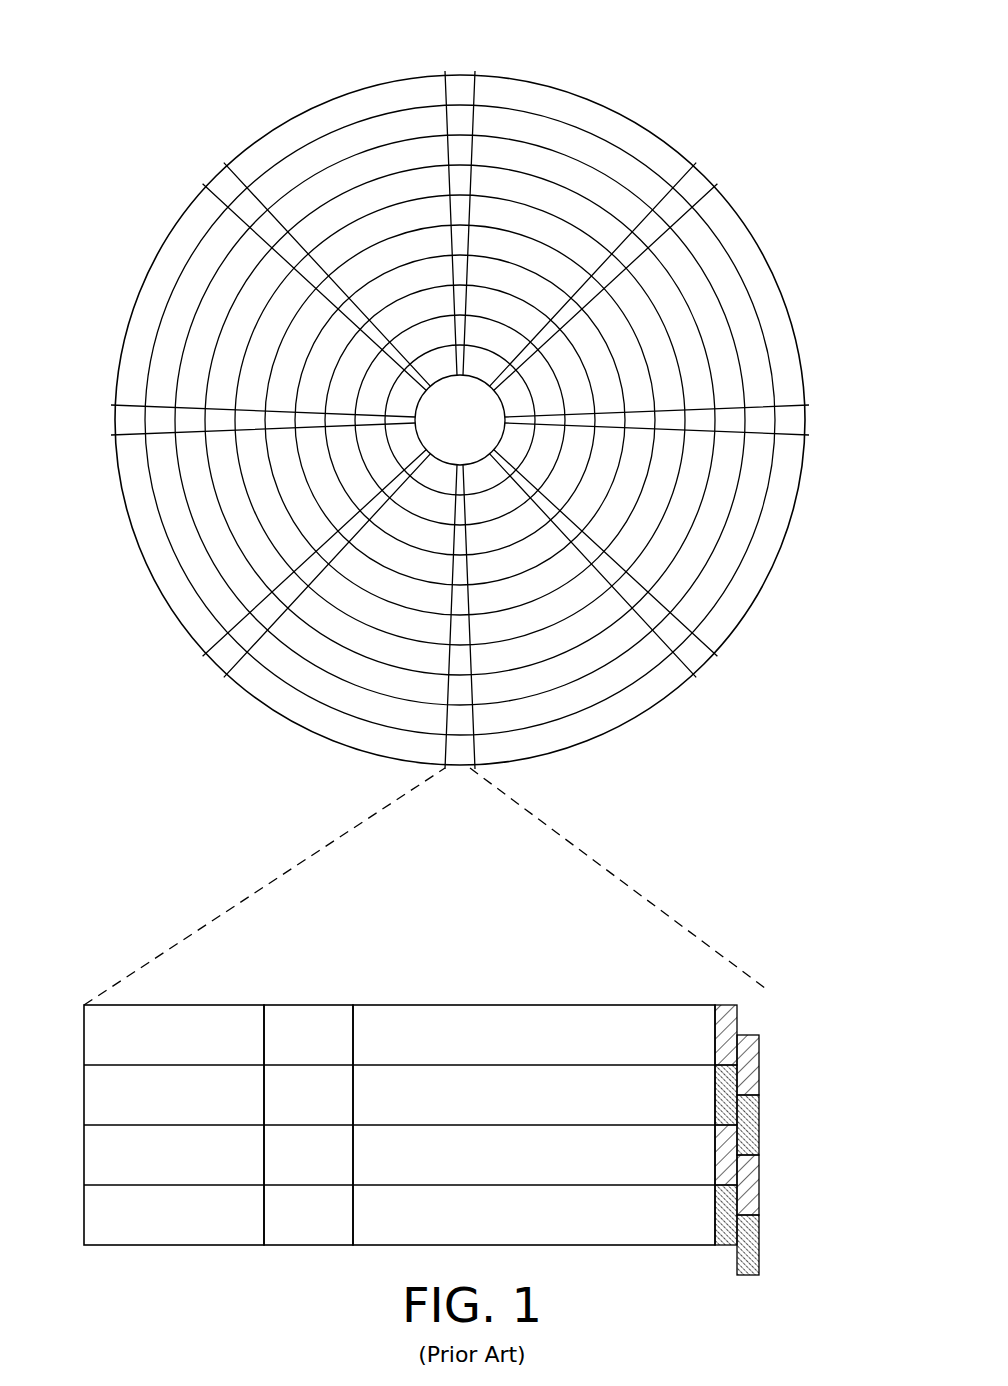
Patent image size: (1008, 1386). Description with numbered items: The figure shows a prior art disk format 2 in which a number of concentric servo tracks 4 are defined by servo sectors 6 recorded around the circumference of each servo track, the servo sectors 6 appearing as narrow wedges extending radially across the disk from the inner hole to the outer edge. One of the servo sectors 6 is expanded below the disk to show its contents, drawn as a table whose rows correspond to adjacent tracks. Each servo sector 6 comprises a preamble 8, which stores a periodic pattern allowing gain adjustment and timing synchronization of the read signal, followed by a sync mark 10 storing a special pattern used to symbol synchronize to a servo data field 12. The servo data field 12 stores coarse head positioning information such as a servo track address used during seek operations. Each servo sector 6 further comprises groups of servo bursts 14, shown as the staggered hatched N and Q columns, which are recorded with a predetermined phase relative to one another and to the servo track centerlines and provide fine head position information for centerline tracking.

The disk format 2 is at (205, 78).
The servo tracks 4 is at (577, 145).
The servo sectors 6 is at (304, 845).
The preamble 8 is at (183, 1005).
The sync mark 10 is at (311, 1005).
The servo data field 12 is at (520, 1005).
The servo bursts 14 is at (754, 1002).